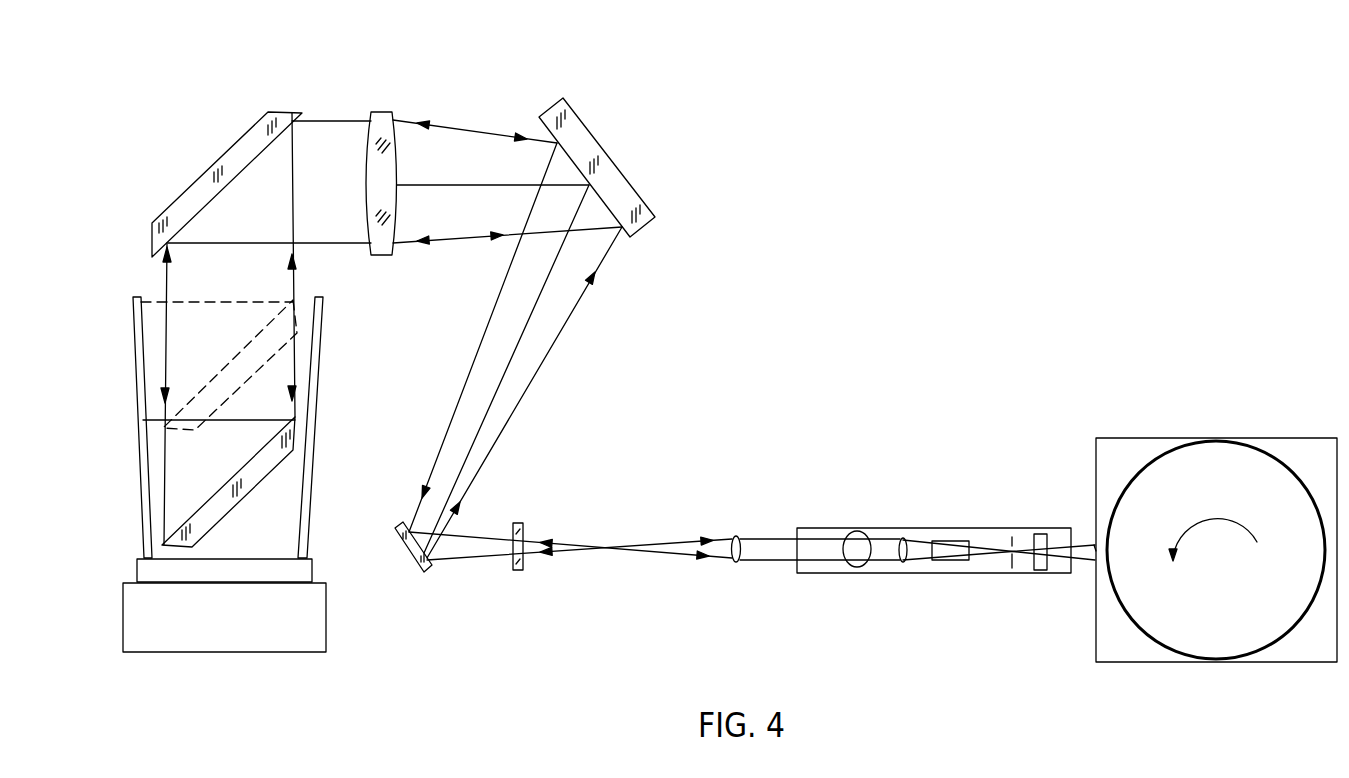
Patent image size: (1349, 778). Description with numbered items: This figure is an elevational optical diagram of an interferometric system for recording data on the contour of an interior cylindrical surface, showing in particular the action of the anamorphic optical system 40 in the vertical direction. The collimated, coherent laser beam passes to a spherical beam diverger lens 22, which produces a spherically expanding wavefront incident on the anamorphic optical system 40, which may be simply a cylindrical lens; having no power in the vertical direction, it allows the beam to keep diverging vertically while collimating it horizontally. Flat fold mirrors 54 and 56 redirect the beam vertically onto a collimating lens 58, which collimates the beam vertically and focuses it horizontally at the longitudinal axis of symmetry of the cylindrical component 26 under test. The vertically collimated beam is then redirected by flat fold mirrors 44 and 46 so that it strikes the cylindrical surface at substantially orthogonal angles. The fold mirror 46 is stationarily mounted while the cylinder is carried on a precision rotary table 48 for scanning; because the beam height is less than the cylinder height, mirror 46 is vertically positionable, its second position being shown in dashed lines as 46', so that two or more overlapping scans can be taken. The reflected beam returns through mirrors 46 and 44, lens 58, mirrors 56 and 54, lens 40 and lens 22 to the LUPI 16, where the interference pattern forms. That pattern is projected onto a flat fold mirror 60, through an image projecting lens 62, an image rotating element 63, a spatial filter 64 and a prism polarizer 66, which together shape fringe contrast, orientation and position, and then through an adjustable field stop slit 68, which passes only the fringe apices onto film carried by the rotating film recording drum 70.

The flat fold mirror 44 is at (221, 160).
The collimating lens 58 is at (393, 113).
The flat fold mirror 56 is at (604, 151).
The second position of fold mirror 46' is at (266, 354).
The flat fold mirror 46 is at (267, 482).
The cylindrical component 26 is at (310, 512).
The precision rotary table 48 is at (327, 609).
The flat fold mirror 54 is at (418, 571).
The anamorphic optical system 40 is at (523, 526).
The spherical beam diverger lens 22 is at (731, 553).
The LUPI 16 is at (910, 528).
The flat fold mirror 60 is at (848, 562).
The image projecting lens 62 is at (900, 563).
The image rotating element 63 is at (948, 562).
The spatial filter 64 is at (1011, 538).
The prism polarizer 66 is at (1040, 571).
The adjustable field stop slit 68 is at (1096, 548).
The rotating film recording drum 70 is at (1266, 453).